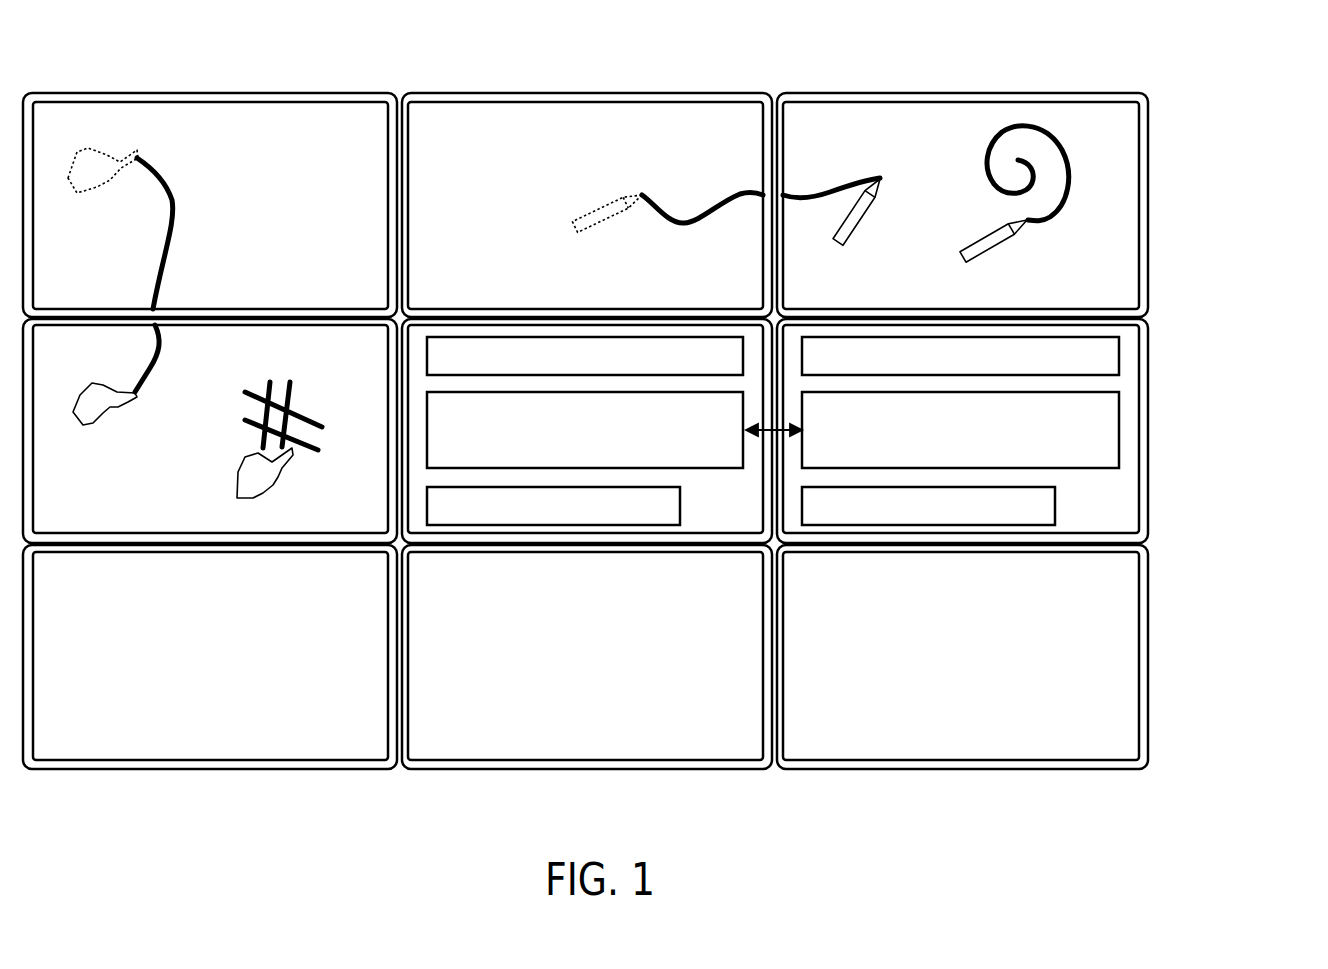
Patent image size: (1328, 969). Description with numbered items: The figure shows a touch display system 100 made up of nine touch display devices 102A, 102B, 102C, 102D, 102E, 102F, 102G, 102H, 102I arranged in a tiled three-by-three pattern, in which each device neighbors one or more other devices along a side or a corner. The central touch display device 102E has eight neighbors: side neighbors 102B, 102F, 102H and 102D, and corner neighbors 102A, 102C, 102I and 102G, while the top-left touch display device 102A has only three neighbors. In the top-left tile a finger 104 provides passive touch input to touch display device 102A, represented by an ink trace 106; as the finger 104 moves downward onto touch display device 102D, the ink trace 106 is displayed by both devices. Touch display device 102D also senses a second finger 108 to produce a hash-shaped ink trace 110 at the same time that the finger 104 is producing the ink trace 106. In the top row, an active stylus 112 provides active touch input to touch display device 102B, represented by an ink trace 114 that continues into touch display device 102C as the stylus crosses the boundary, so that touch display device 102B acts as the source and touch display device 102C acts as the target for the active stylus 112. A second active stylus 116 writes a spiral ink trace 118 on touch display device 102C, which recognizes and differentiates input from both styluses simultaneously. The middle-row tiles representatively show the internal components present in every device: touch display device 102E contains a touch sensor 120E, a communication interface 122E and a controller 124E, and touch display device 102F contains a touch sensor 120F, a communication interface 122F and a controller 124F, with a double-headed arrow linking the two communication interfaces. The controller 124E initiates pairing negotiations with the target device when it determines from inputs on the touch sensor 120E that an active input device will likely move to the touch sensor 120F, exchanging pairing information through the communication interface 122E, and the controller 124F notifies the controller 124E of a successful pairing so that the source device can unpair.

The touch display system 100 is at (1204, 61).
The touch display device 102A is at (375, 302).
The touch display device 102B is at (750, 302).
The touch display device 102C is at (1125, 302).
The touch display device 102D is at (375, 527).
The touch display device 102E is at (750, 527).
The touch display device 102F is at (1125, 527).
The touch display device 102G is at (375, 754).
The touch display device 102H is at (750, 754).
The touch display device 102I is at (1125, 754).
The finger 104 is at (103, 423).
The ink trace 106 is at (173, 192).
The second finger 108 is at (240, 497).
The ink trace 110 is at (295, 394).
The active stylus 112 is at (867, 213).
The ink trace 114 is at (715, 202).
The second active stylus 116 is at (1007, 240).
The ink trace 118 is at (1072, 181).
The touch sensor 120E is at (693, 367).
The touch sensor 120F is at (1068, 367).
The communication interface 122E is at (608, 457).
The communication interface 122F is at (983, 457).
The controller 124E is at (648, 517).
The controller 124F is at (1023, 517).